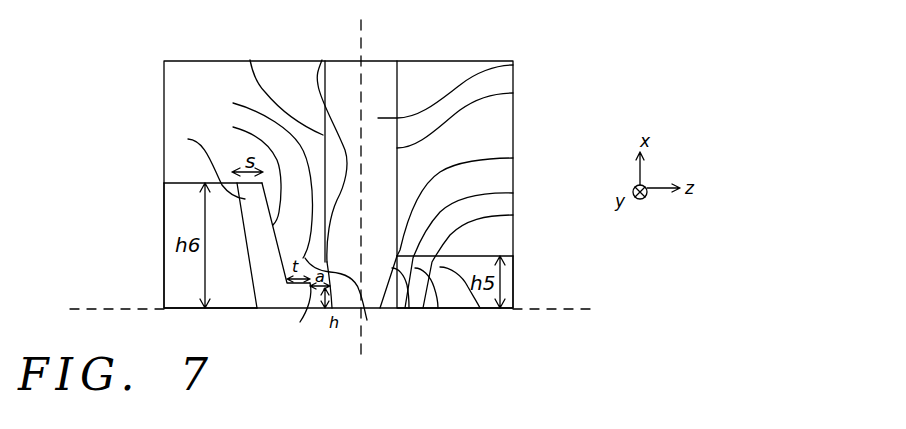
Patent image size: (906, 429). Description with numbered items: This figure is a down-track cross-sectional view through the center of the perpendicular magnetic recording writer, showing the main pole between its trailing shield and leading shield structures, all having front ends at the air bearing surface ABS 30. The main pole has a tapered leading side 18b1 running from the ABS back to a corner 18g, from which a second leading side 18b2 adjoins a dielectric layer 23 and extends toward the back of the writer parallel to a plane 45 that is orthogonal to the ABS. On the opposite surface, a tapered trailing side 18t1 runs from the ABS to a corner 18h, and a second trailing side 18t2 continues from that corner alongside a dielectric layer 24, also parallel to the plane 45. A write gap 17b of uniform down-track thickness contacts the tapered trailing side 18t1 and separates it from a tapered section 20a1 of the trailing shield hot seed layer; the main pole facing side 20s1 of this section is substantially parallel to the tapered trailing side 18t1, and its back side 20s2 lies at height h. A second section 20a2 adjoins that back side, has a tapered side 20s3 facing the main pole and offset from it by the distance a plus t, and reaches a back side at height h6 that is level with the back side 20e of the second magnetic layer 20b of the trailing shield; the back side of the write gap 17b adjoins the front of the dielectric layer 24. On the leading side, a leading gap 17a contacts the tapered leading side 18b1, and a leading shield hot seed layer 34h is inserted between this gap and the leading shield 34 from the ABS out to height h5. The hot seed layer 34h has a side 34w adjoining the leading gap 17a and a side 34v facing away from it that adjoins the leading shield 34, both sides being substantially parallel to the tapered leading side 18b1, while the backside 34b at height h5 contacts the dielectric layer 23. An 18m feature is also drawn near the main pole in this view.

The dielectric layer 24 is at (193, 72).
The dielectric layer 23 is at (497, 122).
The back side of second magnetic layer 20e is at (188, 183).
The second magnetic layer 20b is at (180, 285).
The tapered section 20a1 is at (283, 300).
The main pole facing side 20s1 is at (312, 298).
The back side 20s2 is at (300, 322).
The second section 20a2 is at (188, 137).
The write gap 17b is at (233, 103).
The tapered side 20s3 is at (233, 127).
The second trailing side 18t2 is at (250, 60).
The corner 18h is at (322, 60).
The tapered trailing side 18t1 is at (367, 320).
The plane 45 is at (362, 190).
The ABS 30 is at (335, 311).
The flow line 18m is at (513, 65).
The second leading side 18b2 is at (513, 93).
The corner 18g is at (513, 158).
The leading gap 17a is at (513, 193).
The leading shield hot seed layer 34h is at (513, 215).
The backside of leading shield 34b is at (480, 257).
The leading shield 34 is at (510, 280).
The tapered leading side 18b1 is at (409, 308).
The side of hot seed layer 34w is at (438, 308).
The side of hot seed layer 34v is at (480, 308).